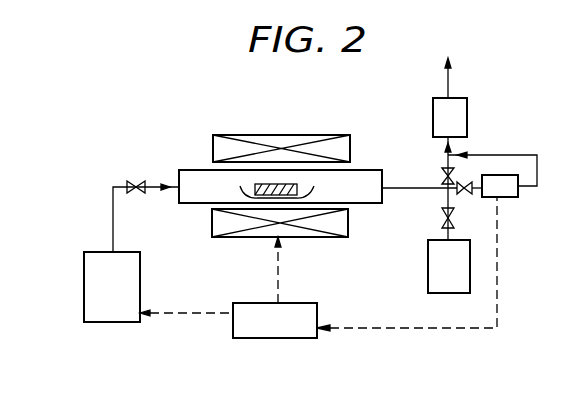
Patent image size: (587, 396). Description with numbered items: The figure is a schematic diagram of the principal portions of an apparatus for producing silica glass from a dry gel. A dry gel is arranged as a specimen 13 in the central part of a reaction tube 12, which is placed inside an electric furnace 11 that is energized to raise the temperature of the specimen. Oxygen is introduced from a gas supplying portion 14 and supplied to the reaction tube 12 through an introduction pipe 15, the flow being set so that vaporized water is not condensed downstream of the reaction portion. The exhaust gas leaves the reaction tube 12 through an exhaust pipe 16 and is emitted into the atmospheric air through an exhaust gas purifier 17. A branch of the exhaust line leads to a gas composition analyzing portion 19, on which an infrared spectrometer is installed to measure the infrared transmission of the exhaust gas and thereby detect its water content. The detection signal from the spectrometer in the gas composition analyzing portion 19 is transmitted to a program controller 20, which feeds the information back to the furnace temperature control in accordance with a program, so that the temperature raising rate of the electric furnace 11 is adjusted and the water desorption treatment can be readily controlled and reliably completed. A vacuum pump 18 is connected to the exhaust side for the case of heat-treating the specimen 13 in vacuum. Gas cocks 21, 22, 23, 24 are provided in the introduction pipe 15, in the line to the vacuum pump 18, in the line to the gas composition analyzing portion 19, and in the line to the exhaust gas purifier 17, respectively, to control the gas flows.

The electric furnace 11 is at (318, 135).
The reaction tube 12 is at (362, 170).
The specimen 13 is at (268, 184).
The gas supplying portion 14 is at (84, 285).
The introduction pipe 15 is at (120, 186).
The exhaust pipe 16 is at (408, 188).
The exhaust gas purifier 17 is at (467, 108).
The vacuum pump 18 is at (470, 270).
The gas composition analyzing portion 19 is at (498, 175).
The program controller 20 is at (262, 338).
The gas cock 21 is at (137, 195).
The gas cock 22 is at (440, 216).
The gas cock 23 is at (466, 195).
The gas cock 24 is at (455, 172).